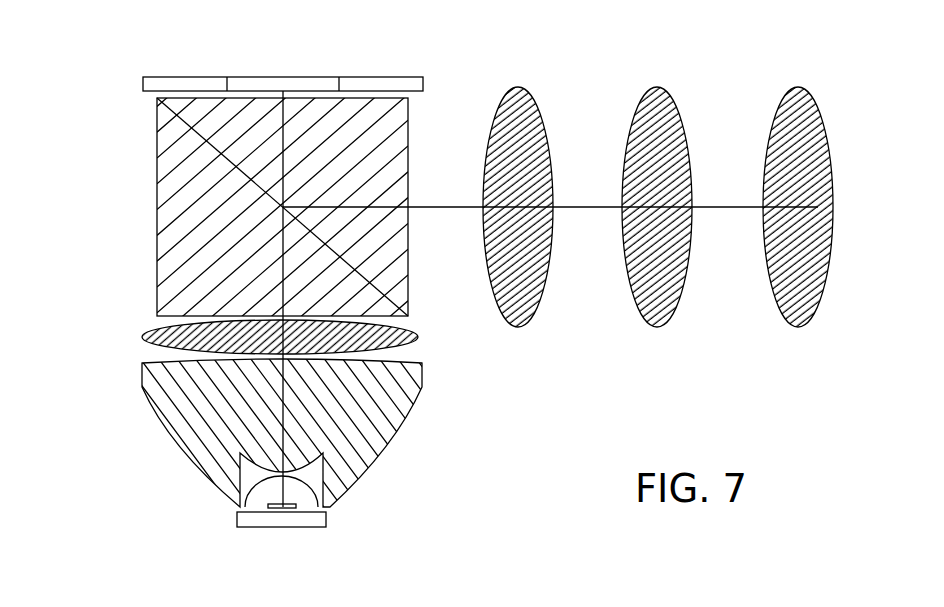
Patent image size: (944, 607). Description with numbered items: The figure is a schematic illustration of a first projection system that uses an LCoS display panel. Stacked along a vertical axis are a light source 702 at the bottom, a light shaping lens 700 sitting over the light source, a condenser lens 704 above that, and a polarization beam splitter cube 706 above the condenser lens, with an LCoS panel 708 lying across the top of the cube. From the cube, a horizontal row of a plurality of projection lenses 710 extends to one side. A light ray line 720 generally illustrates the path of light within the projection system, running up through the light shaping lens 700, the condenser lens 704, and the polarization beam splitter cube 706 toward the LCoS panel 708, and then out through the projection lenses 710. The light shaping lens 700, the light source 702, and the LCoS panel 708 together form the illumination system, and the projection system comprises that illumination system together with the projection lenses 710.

The light shaping lens 700 is at (180, 447).
The light source 702 is at (303, 527).
The condenser lens 704 is at (143, 335).
The polarization beam splitter cube 706 is at (157, 222).
The LCoS panel 708 is at (248, 77).
The projection lenses 710 is at (505, 97).
The light ray line 720 is at (599, 207).